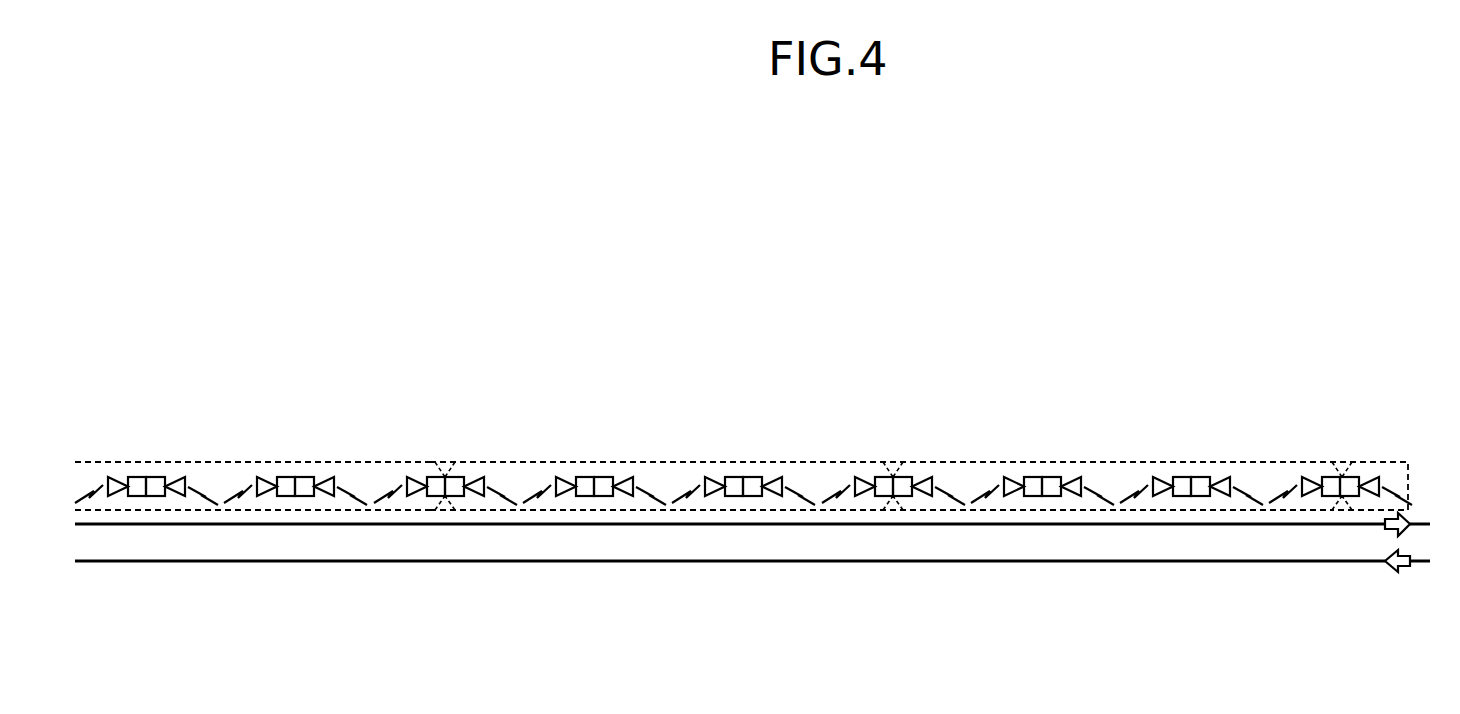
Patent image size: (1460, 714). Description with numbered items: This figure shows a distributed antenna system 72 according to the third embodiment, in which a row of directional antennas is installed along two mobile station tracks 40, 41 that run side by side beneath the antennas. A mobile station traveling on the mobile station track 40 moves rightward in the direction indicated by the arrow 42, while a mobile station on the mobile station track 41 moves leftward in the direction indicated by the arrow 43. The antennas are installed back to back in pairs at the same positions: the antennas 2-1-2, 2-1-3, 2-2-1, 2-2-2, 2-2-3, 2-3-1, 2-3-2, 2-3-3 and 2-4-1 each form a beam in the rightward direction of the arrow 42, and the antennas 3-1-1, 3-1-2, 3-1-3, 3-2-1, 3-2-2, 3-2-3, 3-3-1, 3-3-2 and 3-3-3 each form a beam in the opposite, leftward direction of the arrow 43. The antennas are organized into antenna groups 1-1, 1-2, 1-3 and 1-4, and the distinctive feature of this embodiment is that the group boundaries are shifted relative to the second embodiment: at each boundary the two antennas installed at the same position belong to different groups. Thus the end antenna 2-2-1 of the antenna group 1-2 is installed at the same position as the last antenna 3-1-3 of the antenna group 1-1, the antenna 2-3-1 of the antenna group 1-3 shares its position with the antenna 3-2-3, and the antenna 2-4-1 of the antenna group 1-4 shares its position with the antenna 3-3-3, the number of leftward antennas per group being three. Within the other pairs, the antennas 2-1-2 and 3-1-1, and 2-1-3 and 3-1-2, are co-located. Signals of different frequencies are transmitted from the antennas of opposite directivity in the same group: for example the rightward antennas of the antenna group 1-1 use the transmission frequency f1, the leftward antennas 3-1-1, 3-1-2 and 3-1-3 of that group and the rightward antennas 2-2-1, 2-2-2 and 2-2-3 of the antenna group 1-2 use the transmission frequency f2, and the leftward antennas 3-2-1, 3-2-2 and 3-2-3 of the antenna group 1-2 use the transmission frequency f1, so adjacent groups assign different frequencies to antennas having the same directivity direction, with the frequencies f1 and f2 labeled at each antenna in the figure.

The distributed antenna system 72 is at (1271, 246).
The mobile station track 40 is at (1418, 523).
The mobile station track 41 is at (1425, 562).
The arrow 42 is at (1410, 512).
The arrow 43 is at (1402, 574).
The antenna group 1-1 is at (330, 462).
The antenna group 1-2 is at (777, 462).
The antenna group 1-3 is at (1226, 462).
The antenna group 1-4 is at (1375, 462).
The antenna 2-1-2 is at (155, 477).
The antenna 2-1-3 is at (304, 477).
The antenna 2-2-1 is at (454, 477).
The antenna 2-2-2 is at (603, 477).
The antenna 2-2-3 is at (752, 477).
The antenna 2-3-1 is at (902, 477).
The antenna 2-3-2 is at (1051, 477).
The antenna 2-3-3 is at (1200, 477).
The antenna 2-4-1 is at (1349, 477).
The antenna 3-1-1 is at (137, 477).
The antenna 3-1-2 is at (286, 477).
The antenna 3-1-3 is at (436, 477).
The antenna 3-2-1 is at (585, 477).
The antenna 3-2-2 is at (734, 477).
The antenna 3-2-3 is at (884, 477).
The antenna 3-3-1 is at (1033, 477).
The antenna 3-3-2 is at (1182, 477).
The antenna 3-3-3 is at (1331, 477).
The transmission frequency f1 is at (216, 503).
The transmission frequency f2 is at (103, 486).